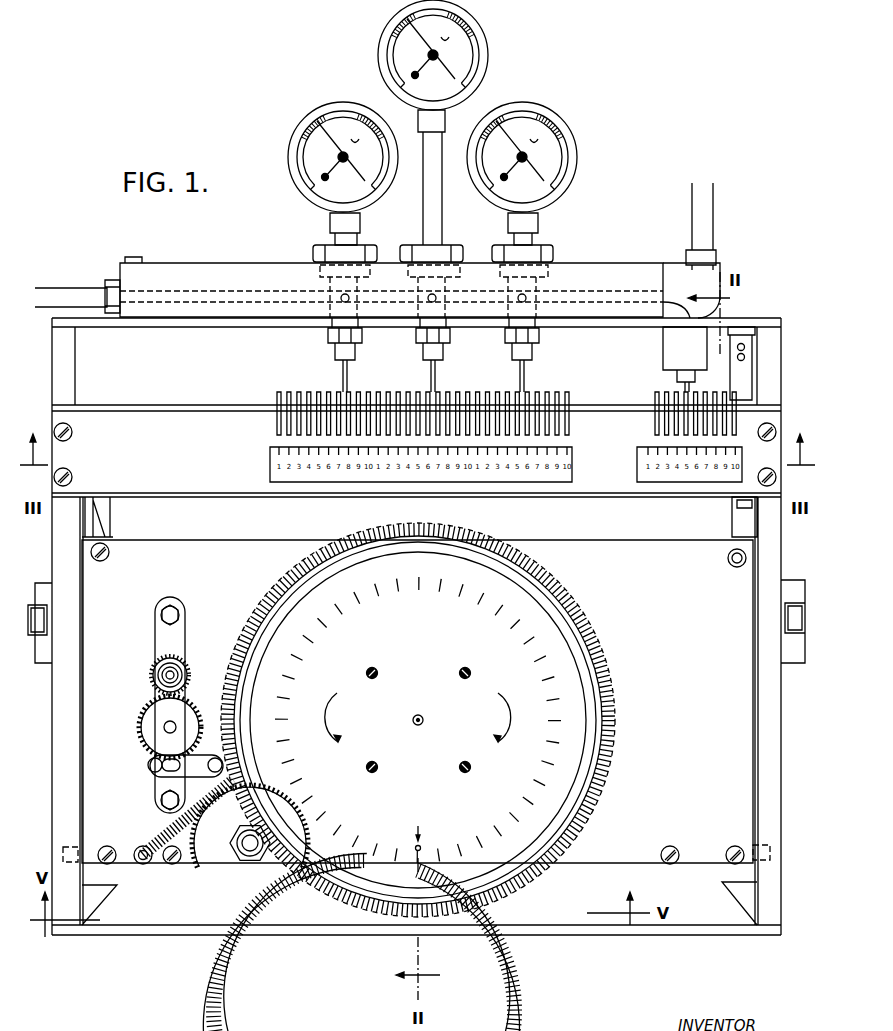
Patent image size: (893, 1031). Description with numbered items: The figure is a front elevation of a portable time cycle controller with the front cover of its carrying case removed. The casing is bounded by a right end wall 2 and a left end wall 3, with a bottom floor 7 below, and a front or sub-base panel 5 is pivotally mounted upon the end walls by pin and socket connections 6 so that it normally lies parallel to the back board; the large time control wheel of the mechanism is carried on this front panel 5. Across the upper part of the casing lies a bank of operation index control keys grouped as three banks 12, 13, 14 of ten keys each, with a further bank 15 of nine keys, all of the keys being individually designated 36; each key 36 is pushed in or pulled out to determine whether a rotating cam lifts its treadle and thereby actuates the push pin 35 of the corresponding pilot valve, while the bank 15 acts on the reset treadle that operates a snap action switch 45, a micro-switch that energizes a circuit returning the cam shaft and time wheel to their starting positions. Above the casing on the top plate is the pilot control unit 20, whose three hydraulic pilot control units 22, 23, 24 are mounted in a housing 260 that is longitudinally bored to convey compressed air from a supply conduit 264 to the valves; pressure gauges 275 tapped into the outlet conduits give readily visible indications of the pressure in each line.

The right end wall 2 is at (770, 746).
The left end wall 3 is at (66, 731).
The front or sub-base panel 5 is at (656, 610).
The pin and socket connections 6 is at (63, 853).
The bottom floor 7 is at (302, 936).
The bank of index keys 12 is at (284, 393).
The bank of index keys 13 is at (421, 393).
The bank of index keys 14 is at (483, 393).
The bank of nine keys 15 is at (652, 395).
The pilot control unit 20 is at (231, 264).
The hydraulic pilot control unit 22 is at (317, 256).
The hydraulic pilot control unit 23 is at (413, 250).
The hydraulic pilot control unit 24 is at (508, 250).
The push pin 35 is at (342, 380).
The index keys 36 is at (478, 400).
The snap action switch 45 is at (688, 343).
The housing 260 is at (168, 270).
The supply conduit 264 is at (708, 243).
The pressure gauges 275 is at (387, 68).